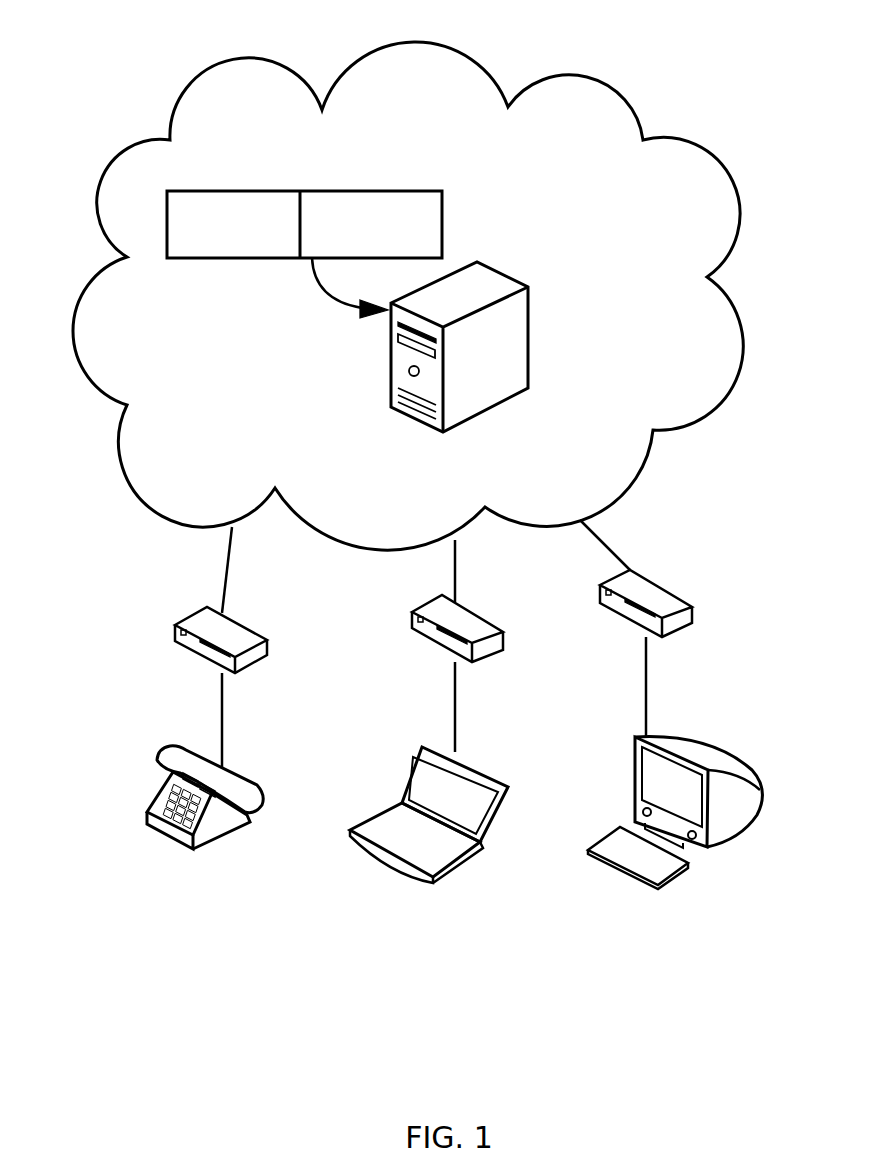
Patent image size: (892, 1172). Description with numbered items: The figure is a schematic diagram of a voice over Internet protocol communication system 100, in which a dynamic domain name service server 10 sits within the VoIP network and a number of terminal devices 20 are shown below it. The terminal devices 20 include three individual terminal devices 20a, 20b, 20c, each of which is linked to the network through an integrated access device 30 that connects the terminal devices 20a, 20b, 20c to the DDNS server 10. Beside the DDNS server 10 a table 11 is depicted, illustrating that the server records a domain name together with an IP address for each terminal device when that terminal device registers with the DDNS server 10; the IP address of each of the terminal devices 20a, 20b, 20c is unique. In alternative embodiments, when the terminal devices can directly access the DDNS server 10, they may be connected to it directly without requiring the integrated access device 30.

The voice over Internet protocol communication system 100 is at (477, 58).
The domain name to IP address mapping table 11 is at (225, 192).
The dynamic domain name service server 10 is at (495, 267).
The integrated access device 30 is at (233, 617).
The terminal devices 20 is at (730, 895).
The terminal device 20a is at (207, 848).
The terminal device 20b is at (455, 870).
The terminal device 20c is at (717, 845).